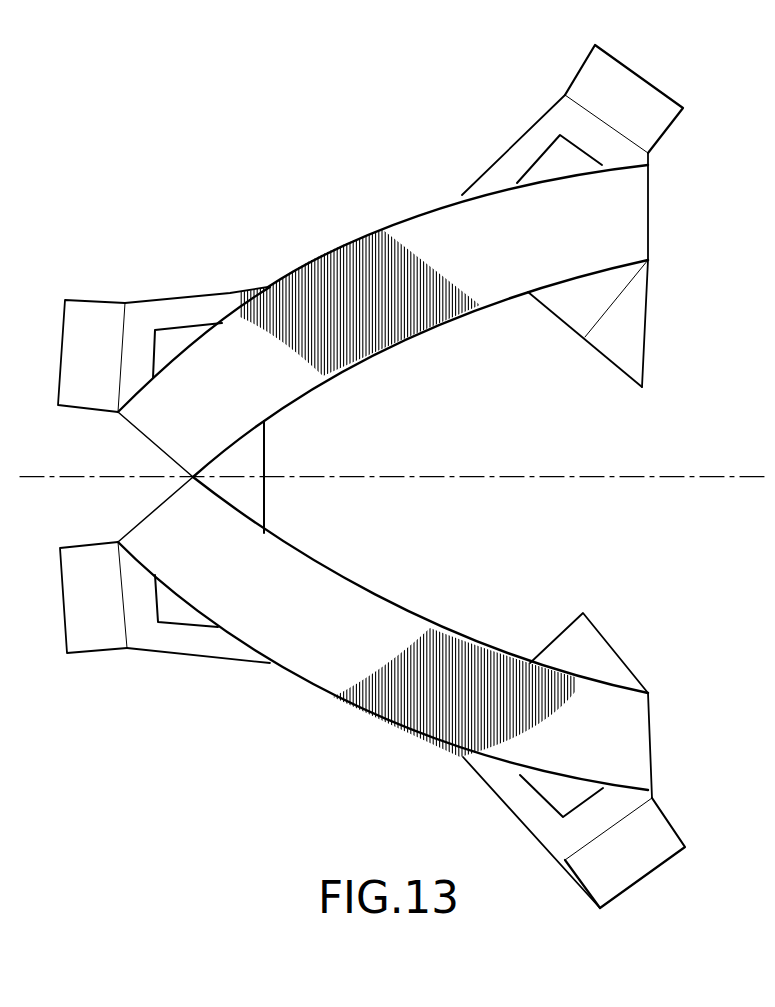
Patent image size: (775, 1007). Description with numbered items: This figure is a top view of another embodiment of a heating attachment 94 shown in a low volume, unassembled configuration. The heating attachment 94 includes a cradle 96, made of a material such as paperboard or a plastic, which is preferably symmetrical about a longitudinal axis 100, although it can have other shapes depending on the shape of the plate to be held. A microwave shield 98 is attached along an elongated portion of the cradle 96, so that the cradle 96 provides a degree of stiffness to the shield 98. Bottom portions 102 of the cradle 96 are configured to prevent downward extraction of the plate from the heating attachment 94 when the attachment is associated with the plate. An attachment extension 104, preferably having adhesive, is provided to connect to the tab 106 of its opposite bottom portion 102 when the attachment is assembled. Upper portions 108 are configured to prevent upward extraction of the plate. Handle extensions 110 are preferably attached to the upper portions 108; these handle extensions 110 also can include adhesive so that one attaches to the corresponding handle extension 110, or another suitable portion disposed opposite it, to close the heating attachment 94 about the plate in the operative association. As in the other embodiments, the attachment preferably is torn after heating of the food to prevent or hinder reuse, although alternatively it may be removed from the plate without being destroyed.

The heating attachment 94 is at (360, 152).
The cradle 96 is at (222, 308).
The microwave shield 98 is at (387, 308).
The longitudinal axis 100 is at (555, 477).
The bottom portions 102 is at (570, 308).
The attachment extension 104 is at (632, 338).
The tab 106 is at (582, 642).
The upper portions 108 is at (520, 152).
The handle extensions 110 is at (620, 88).